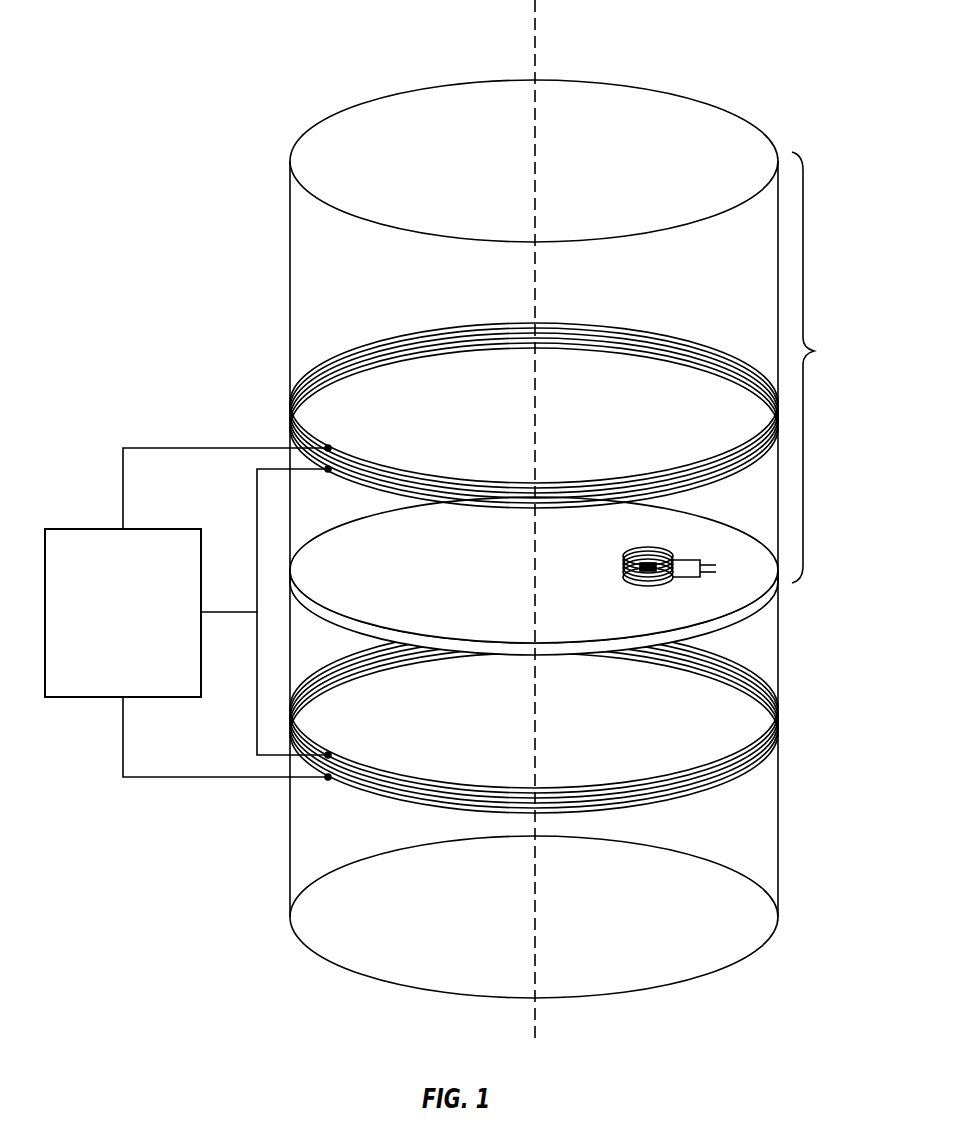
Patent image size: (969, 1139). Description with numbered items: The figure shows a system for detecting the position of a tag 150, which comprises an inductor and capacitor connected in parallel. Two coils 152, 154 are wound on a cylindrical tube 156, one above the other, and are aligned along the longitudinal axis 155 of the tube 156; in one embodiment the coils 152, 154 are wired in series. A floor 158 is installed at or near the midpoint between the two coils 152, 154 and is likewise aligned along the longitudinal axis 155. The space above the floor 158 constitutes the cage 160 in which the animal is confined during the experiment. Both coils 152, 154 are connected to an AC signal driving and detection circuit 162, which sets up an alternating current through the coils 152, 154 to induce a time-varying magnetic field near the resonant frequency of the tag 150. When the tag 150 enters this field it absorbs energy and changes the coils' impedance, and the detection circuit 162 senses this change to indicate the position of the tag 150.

The tag 150 is at (622, 563).
The coil 152 is at (300, 382).
The coil 154 is at (330, 780).
The longitudinal axis 155 is at (535, 63).
The cylindrical tube 156 is at (293, 150).
The floor 158 is at (510, 654).
The cage 160 is at (825, 367).
The AC signal driving and detection circuit 162 is at (108, 528).